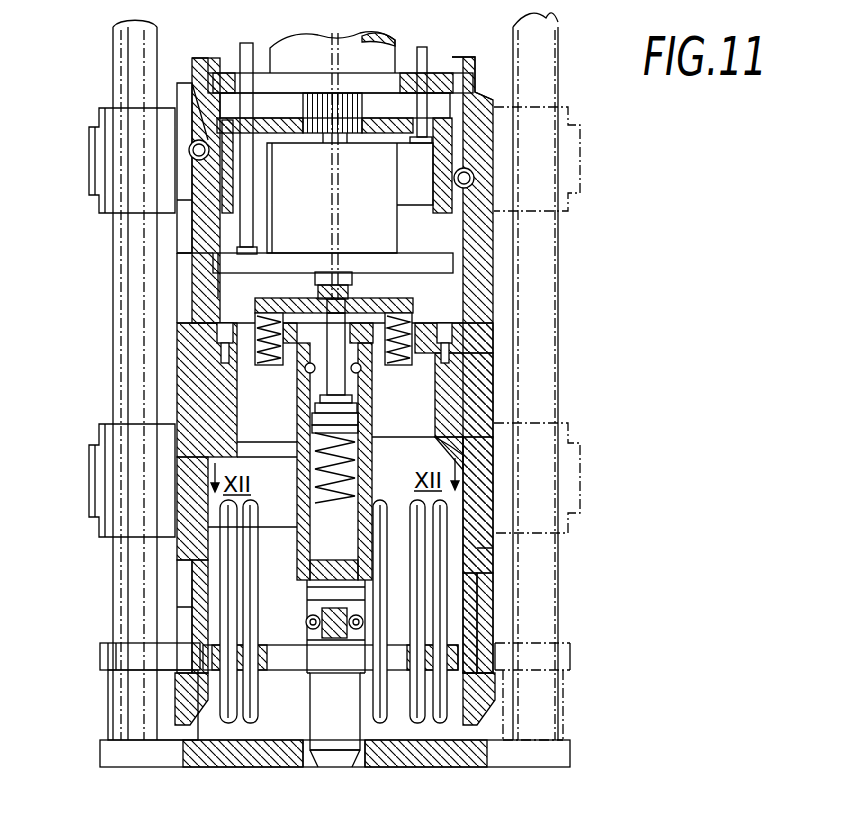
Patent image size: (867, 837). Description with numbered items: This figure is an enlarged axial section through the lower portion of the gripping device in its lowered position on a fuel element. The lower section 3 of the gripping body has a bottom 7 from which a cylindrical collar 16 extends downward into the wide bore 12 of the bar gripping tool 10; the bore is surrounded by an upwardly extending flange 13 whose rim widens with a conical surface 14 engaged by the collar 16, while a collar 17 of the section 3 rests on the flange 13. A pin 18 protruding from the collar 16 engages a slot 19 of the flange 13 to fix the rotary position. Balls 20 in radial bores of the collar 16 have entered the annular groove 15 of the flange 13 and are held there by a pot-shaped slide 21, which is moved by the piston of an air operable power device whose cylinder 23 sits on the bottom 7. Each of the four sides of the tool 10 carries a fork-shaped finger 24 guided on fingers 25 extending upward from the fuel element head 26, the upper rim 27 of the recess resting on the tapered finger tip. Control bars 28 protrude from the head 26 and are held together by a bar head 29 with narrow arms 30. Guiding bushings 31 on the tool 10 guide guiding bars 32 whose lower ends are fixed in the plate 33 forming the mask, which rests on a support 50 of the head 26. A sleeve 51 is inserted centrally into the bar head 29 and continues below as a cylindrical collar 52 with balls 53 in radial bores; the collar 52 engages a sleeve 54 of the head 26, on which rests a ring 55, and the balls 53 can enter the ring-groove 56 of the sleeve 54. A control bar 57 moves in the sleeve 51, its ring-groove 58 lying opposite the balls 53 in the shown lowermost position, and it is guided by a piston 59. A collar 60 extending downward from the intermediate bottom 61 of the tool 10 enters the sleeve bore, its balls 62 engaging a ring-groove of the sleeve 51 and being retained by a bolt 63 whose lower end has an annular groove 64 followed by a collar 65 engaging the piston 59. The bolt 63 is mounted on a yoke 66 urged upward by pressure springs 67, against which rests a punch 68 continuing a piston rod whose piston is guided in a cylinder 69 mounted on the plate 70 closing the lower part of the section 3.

The lower section 3 is at (197, 88).
The bottom 7 is at (246, 75).
The bar gripping tool 10 is at (92, 326).
The wide bore 12 is at (215, 270).
The flange 13 is at (185, 233).
The conical surface 14 is at (500, 97).
The annular groove 15 is at (182, 217).
The cylindrical collar 16 is at (465, 215).
The collar 17 is at (478, 97).
The pin 18 is at (180, 147).
The slot 19 is at (192, 100).
The balls 20 is at (470, 178).
The pot-shaped slide 21 is at (440, 183).
The cylinder 23 is at (318, 50).
The fork-shaped finger 24 is at (182, 592).
The fingers 25 is at (193, 607).
The fuel element head 26 is at (78, 739).
The upper rim 27 is at (180, 548).
The control bars 28 is at (242, 512).
The bar head 29 is at (390, 512).
The arms 30 is at (270, 527).
The guiding bushings 31 is at (93, 150).
The guiding bars 32 is at (125, 52).
The plate 33 is at (105, 660).
The support 50 is at (120, 698).
The sleeve 51 is at (437, 438).
The cylindrical collar 52 is at (357, 642).
The balls 53 is at (365, 622).
The sleeve 54 is at (305, 748).
The ring 55 is at (467, 565).
The ring-groove 56 is at (195, 628).
The control bar 57 is at (322, 546).
The ring-groove 58 is at (336, 640).
The piston 59 is at (242, 428).
The collar 60 is at (290, 360).
The intermediate bottom 61 is at (247, 322).
The balls 62 is at (360, 368).
The bolt 63 is at (313, 292).
The annular groove 64 is at (325, 403).
The collar 65 is at (352, 412).
The yoke 66 is at (404, 320).
The pressure springs 67 is at (410, 318).
The punch 68 is at (347, 283).
The cylinder 69 is at (286, 201).
The plate 70 is at (200, 292).